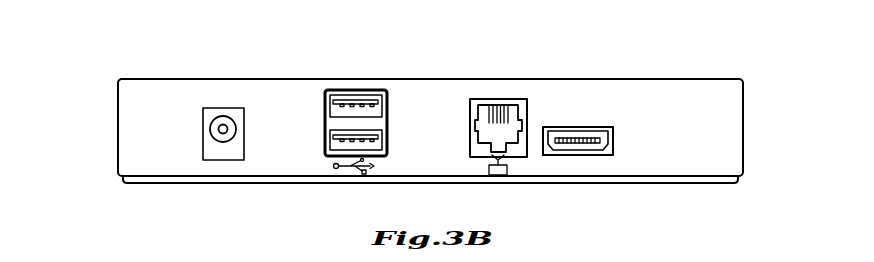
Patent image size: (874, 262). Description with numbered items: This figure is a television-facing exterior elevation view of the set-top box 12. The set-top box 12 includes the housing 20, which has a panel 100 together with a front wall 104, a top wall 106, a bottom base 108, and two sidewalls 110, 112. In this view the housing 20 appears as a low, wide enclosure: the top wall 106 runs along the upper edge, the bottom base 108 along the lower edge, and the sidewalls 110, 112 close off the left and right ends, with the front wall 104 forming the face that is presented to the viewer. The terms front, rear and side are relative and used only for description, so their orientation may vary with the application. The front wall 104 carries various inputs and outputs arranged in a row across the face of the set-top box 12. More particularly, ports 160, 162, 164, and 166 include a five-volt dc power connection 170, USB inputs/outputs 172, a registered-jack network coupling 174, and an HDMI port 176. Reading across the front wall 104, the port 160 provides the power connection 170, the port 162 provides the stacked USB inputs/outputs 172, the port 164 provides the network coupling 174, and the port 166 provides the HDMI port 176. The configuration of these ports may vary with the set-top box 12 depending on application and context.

The panel 100 is at (716, 78).
The set-top box 12 is at (144, 68).
The top wall 106 is at (190, 79).
The bottom base 108 is at (280, 185).
The sidewall 110 is at (118, 129).
The sidewall 112 is at (743, 128).
The front wall 104 is at (169, 170).
The housing 20 is at (132, 186).
The port 160 is at (233, 112).
The 5V dc power connection 170 is at (221, 155).
The port 162 is at (355, 90).
The USB inputs/outputs 172 is at (337, 152).
The port 164 is at (500, 103).
The RJ-45 coupling 174 is at (517, 148).
The port 166 is at (578, 128).
The HDMI port 176 is at (606, 157).